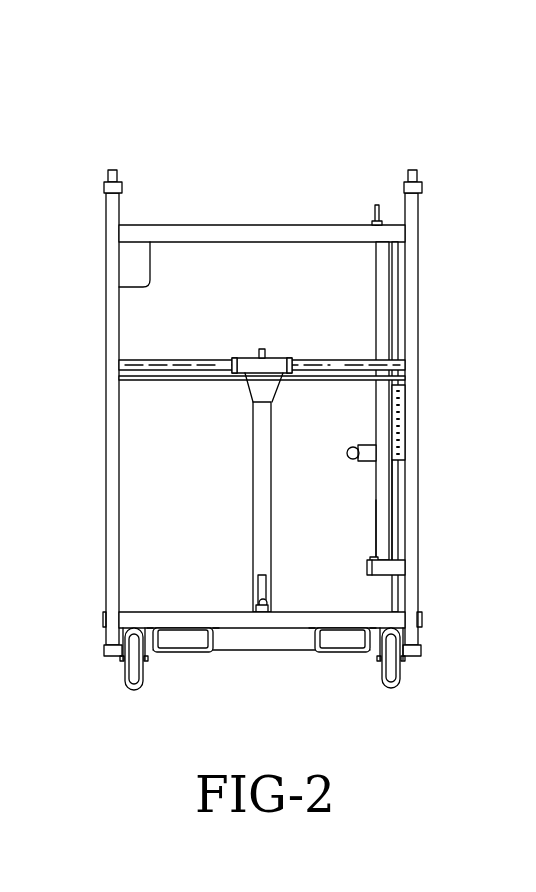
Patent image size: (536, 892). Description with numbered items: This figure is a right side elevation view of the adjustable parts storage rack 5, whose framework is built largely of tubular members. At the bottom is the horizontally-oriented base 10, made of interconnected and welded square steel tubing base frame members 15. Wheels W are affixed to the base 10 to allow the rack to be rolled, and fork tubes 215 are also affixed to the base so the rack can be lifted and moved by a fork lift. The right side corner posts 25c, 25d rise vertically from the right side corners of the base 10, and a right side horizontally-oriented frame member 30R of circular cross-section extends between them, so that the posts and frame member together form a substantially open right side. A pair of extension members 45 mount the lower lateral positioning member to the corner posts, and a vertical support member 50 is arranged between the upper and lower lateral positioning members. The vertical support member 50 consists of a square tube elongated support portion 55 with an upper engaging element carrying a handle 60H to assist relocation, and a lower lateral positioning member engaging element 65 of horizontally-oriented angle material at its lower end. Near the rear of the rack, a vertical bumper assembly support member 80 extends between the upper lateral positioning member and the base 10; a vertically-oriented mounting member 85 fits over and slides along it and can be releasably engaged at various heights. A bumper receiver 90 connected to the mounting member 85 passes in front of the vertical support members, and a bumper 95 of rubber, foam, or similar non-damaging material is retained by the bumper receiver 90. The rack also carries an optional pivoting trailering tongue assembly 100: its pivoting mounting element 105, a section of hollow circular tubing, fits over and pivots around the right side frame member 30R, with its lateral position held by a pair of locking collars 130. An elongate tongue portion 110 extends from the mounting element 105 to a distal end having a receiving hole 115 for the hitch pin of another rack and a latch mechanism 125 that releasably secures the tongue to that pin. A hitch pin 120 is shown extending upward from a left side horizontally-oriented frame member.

The adjustable parts storage rack 5 is at (184, 132).
The base 10 is at (224, 660).
The base frame members 15 is at (360, 618).
The right side corner post 25c is at (113, 222).
The right side corner post 25d is at (416, 220).
The right side horizontally-oriented frame member 30R is at (150, 365).
The extension member 45 is at (400, 567).
The vertical support member 50 is at (370, 279).
The elongated support portion 55 is at (384, 515).
The handle 60H is at (374, 218).
The lower lateral positioning member engaging element 65 is at (372, 561).
The vertical bumper assembly support member 80 is at (399, 476).
The mounting member 85 is at (401, 392).
The bumper receiver 90 is at (370, 450).
The bumper 95 is at (349, 453).
The pivoting trailering tongue assembly 100 is at (239, 441).
The pivoting mounting element 105 is at (256, 372).
The elongate tongue portion 110 is at (262, 505).
The receiving hole 115 is at (263, 608).
The hitch pin 120 is at (262, 348).
The latch mechanism 125 is at (262, 582).
The locking collars 130 is at (234, 358).
The fork tubes 215 is at (338, 652).
The wheels W is at (395, 678).